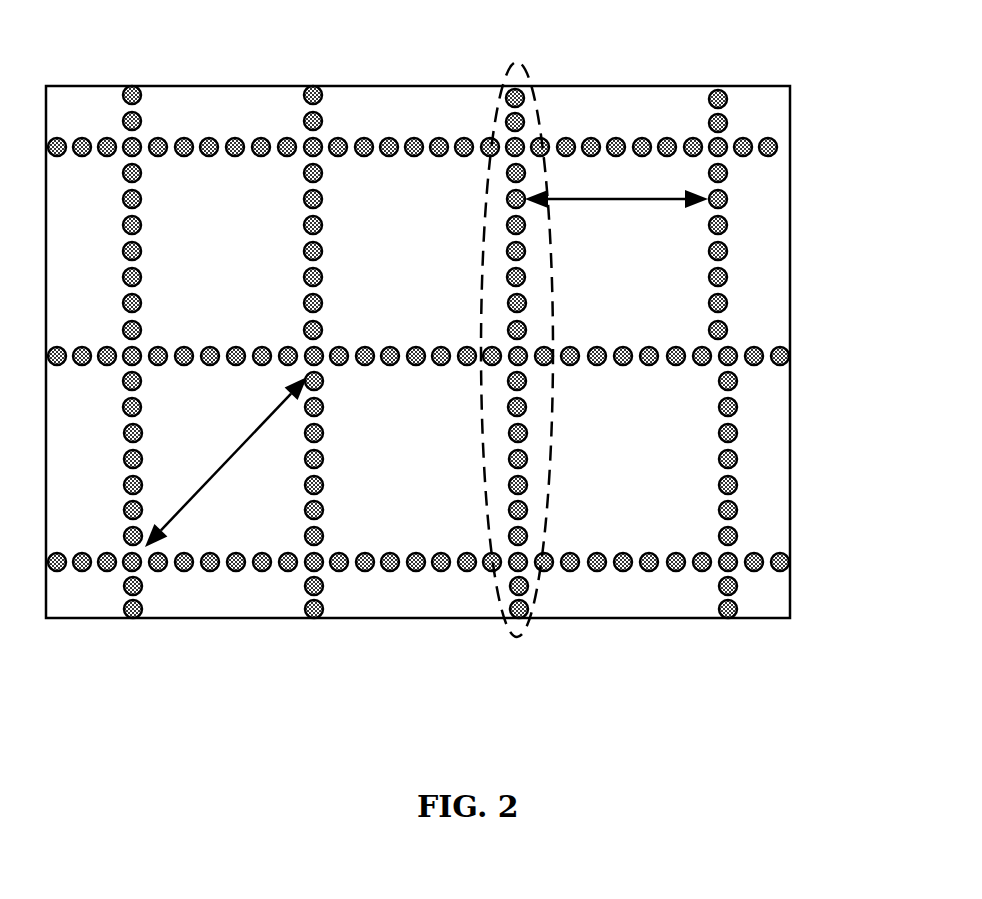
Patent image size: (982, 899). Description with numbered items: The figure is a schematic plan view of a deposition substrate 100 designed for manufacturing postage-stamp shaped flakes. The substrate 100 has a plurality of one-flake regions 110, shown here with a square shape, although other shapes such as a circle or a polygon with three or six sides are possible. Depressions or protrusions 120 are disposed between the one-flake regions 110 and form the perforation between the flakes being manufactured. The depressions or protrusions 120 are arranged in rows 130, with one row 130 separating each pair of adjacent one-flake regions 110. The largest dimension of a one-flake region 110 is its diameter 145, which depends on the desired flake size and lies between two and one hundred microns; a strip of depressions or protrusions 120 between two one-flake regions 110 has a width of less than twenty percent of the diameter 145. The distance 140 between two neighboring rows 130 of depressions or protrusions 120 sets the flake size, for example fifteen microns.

The substrate 100 is at (791, 488).
The one-flake region 110 is at (229, 518).
The depressions or protrusions 120 is at (325, 402).
The row 130 is at (522, 62).
The distance 140 is at (653, 201).
The diameter 145 is at (216, 475).